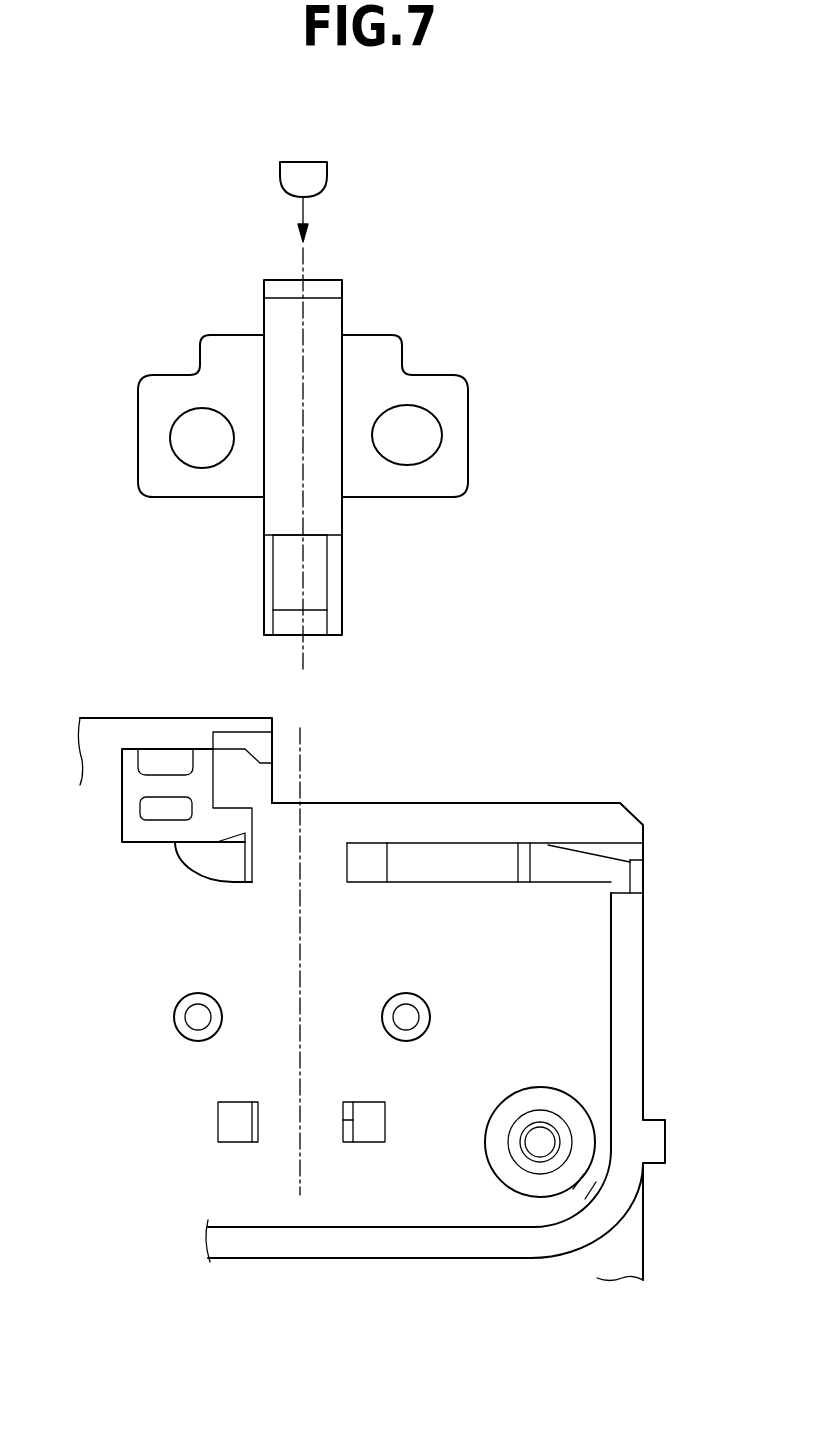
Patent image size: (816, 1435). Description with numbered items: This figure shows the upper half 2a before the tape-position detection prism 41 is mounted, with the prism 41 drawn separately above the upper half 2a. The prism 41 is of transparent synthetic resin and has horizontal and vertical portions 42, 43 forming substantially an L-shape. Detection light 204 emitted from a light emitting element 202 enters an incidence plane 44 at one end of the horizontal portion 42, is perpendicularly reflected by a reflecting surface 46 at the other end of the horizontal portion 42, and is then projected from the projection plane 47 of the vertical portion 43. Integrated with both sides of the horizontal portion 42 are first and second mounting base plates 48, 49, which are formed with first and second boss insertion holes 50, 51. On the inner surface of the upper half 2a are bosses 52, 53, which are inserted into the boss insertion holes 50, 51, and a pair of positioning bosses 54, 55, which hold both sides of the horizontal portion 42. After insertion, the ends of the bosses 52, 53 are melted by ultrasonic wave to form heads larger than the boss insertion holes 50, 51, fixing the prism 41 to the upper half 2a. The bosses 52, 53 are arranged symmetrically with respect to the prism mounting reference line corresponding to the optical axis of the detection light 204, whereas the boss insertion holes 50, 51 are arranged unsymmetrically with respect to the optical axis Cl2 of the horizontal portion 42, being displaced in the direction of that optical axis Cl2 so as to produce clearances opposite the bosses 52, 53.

The light emitting element 202 is at (329, 171).
The detection light 204 is at (306, 209).
The optical axis of the horizontal portion Cl2 is at (303, 324).
The tape-position detection prism 41 is at (192, 318).
The incidence plane 44 is at (323, 282).
The horizontal portion 42 is at (343, 468).
The vertical portion 43 is at (344, 580).
The second reflecting surface 46 is at (283, 572).
The projection plane 47 is at (280, 533).
The first mounting base plate 48 is at (443, 480).
The second mounting base plate 49 is at (182, 483).
The first boss insertion hole 50 is at (425, 445).
The second boss insertion hole 51 is at (183, 448).
The upper half 2a is at (592, 782).
The boss 52 is at (392, 1002).
The boss 53 is at (193, 996).
The positioning boss 54 is at (368, 1130).
The positioning boss 55 is at (232, 1127).